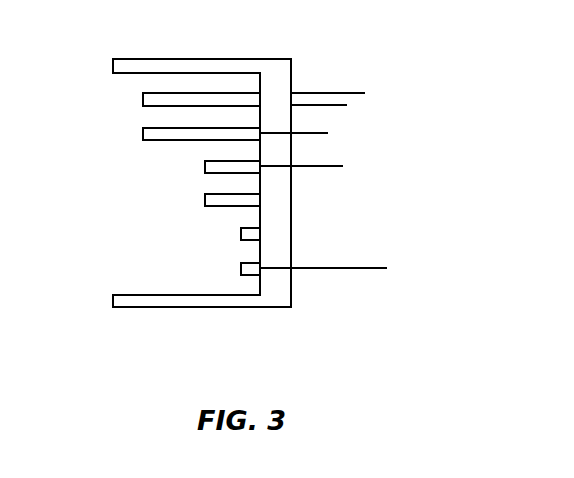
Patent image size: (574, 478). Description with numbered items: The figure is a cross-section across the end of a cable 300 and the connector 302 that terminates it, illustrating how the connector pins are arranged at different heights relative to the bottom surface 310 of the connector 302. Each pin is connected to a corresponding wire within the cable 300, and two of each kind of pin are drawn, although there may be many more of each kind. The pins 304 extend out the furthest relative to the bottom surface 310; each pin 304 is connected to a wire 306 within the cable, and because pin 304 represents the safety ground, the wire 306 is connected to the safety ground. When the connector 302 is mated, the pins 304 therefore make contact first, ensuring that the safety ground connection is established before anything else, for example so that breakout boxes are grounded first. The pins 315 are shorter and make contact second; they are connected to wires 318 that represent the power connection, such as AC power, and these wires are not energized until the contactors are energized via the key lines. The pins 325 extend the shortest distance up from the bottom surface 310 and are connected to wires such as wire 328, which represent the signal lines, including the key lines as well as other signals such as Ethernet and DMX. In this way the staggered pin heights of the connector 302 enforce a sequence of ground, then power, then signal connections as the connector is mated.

The cable 300 is at (333, 93).
The connector 302 is at (158, 58).
The pin 304 is at (143, 99).
The wire 306 is at (337, 106).
The bottom surface 310 is at (258, 213).
The pin 315 is at (205, 165).
The wire 318 is at (316, 166).
The pin 325 is at (241, 266).
The wire 328 is at (353, 268).